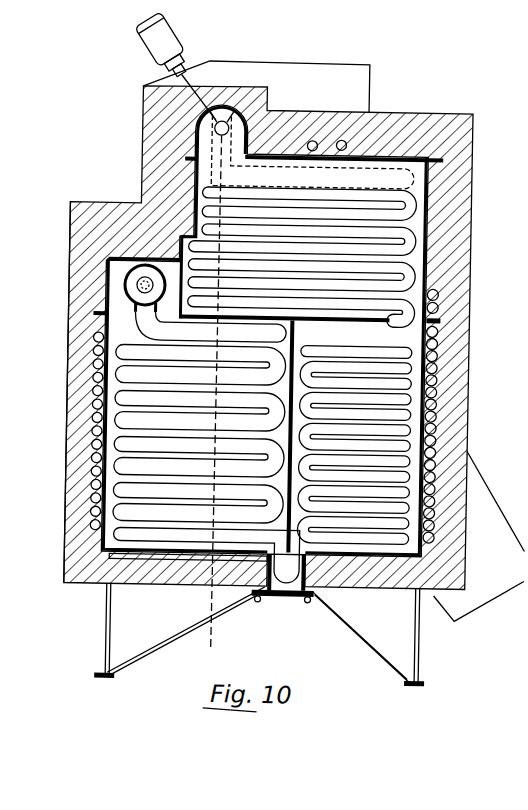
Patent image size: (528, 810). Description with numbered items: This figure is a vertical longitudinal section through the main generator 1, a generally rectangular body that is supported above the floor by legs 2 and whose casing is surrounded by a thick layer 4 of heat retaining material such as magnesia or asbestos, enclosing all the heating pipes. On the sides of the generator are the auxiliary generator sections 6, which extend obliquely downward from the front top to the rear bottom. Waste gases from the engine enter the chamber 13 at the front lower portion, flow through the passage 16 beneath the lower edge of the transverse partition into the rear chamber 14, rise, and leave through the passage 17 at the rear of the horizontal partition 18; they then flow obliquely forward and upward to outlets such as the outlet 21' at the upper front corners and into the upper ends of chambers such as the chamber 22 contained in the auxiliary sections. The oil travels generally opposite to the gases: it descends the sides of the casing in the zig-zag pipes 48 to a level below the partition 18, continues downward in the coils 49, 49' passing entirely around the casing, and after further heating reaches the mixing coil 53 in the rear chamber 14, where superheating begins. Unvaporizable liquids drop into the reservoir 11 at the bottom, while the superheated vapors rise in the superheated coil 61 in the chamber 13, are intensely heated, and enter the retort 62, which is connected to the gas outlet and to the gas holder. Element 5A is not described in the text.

The main generator 1 is at (390, 113).
The legs 2 is at (424, 641).
The layer of heat retaining material 4 is at (441, 118).
The drain trap 5A is at (283, 604).
The auxiliary generator sections 6 is at (479, 537).
The reservoir 11 is at (144, 24).
The chamber 13 is at (94, 493).
The rear chamber 14 is at (430, 412).
The passage 16 is at (314, 597).
The passage 17 is at (436, 298).
The horizontal partition 18 is at (367, 321).
The outlet 21' is at (253, 151).
The chamber 22 is at (224, 121).
The zig-zag pipes 48 is at (437, 290).
The coils 49 is at (264, 428).
The coils 49' is at (474, 441).
The mixing coil of pipe 53 is at (399, 452).
The superheated coil 61 is at (180, 519).
The retort 62 is at (122, 289).